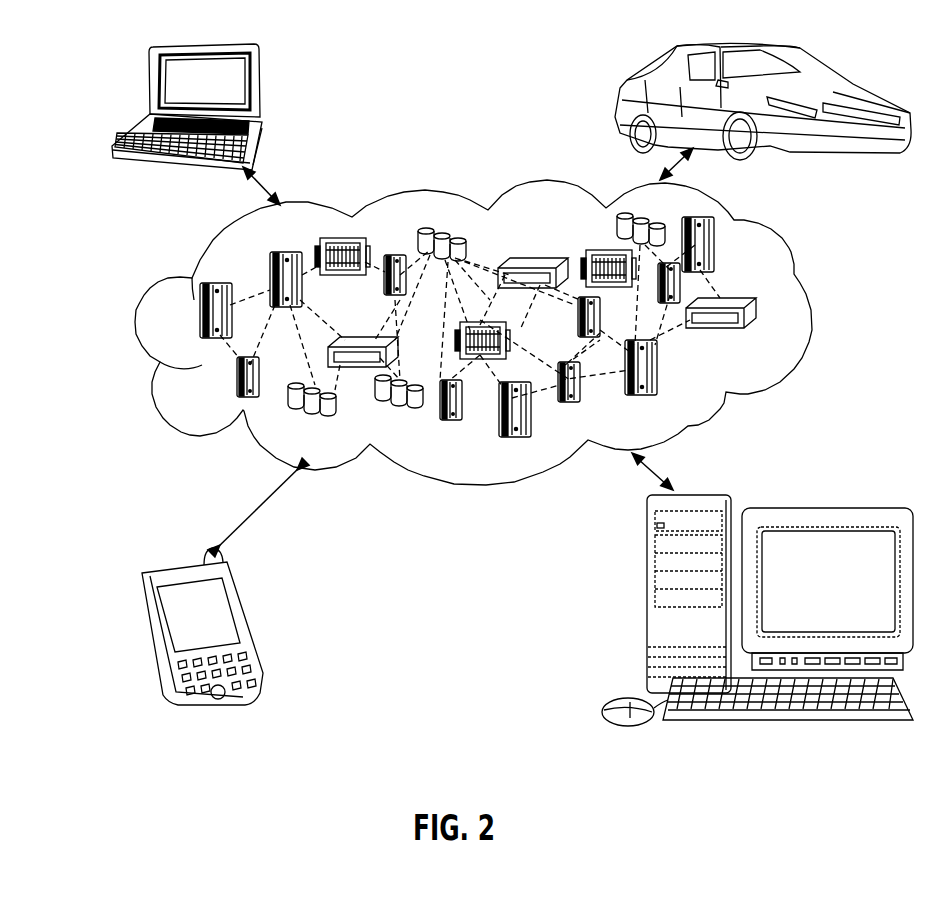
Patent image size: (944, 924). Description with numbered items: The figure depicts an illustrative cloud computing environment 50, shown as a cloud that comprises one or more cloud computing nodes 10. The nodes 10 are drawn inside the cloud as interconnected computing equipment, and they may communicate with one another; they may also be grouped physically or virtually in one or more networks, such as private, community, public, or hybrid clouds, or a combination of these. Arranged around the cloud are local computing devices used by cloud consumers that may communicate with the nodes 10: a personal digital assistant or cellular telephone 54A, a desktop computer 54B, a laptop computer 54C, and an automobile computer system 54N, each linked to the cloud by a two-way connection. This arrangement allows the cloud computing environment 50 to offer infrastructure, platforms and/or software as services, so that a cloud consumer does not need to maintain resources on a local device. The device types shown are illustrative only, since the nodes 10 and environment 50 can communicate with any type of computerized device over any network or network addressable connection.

The cloud computing nodes 10 is at (788, 337).
The cloud computing environment 50 is at (795, 272).
The personal digital assistant (PDA) or cellular telephone 54A is at (258, 615).
The desktop computer 54B is at (647, 605).
The laptop computer 54C is at (260, 88).
The automobile computer system 54N is at (620, 90).